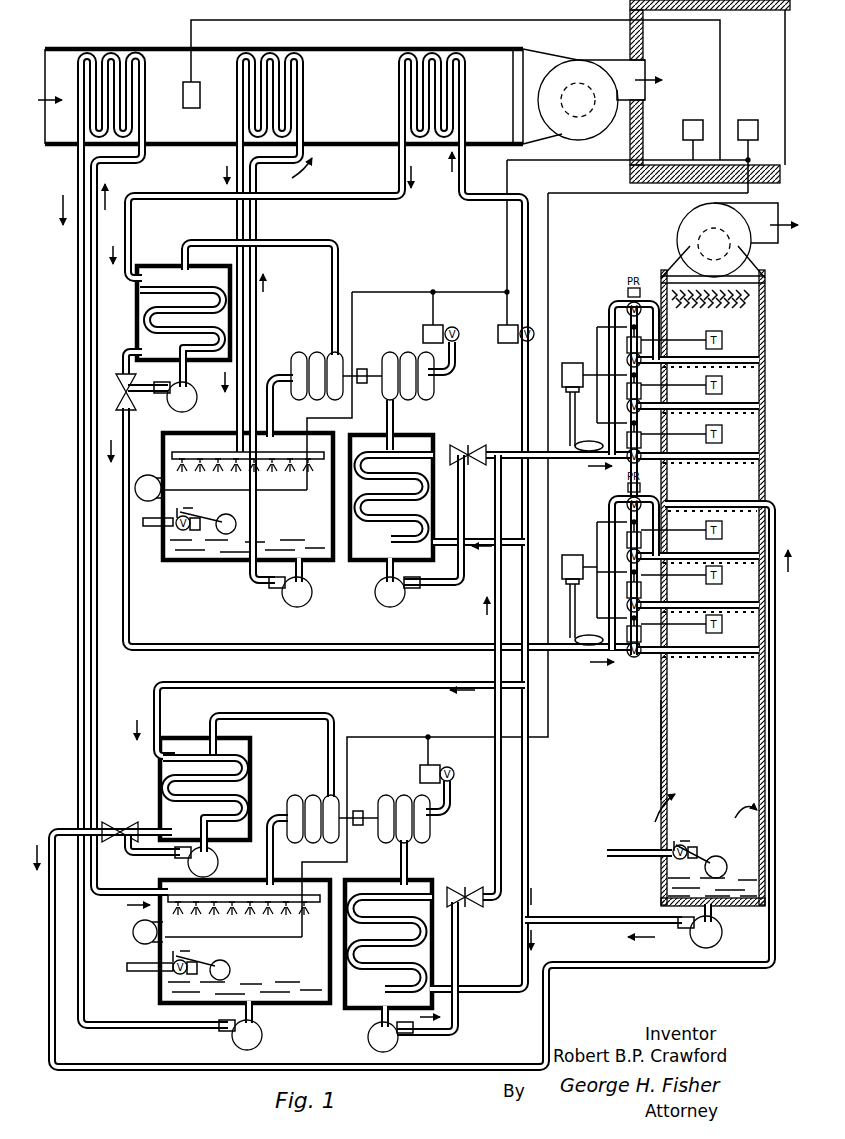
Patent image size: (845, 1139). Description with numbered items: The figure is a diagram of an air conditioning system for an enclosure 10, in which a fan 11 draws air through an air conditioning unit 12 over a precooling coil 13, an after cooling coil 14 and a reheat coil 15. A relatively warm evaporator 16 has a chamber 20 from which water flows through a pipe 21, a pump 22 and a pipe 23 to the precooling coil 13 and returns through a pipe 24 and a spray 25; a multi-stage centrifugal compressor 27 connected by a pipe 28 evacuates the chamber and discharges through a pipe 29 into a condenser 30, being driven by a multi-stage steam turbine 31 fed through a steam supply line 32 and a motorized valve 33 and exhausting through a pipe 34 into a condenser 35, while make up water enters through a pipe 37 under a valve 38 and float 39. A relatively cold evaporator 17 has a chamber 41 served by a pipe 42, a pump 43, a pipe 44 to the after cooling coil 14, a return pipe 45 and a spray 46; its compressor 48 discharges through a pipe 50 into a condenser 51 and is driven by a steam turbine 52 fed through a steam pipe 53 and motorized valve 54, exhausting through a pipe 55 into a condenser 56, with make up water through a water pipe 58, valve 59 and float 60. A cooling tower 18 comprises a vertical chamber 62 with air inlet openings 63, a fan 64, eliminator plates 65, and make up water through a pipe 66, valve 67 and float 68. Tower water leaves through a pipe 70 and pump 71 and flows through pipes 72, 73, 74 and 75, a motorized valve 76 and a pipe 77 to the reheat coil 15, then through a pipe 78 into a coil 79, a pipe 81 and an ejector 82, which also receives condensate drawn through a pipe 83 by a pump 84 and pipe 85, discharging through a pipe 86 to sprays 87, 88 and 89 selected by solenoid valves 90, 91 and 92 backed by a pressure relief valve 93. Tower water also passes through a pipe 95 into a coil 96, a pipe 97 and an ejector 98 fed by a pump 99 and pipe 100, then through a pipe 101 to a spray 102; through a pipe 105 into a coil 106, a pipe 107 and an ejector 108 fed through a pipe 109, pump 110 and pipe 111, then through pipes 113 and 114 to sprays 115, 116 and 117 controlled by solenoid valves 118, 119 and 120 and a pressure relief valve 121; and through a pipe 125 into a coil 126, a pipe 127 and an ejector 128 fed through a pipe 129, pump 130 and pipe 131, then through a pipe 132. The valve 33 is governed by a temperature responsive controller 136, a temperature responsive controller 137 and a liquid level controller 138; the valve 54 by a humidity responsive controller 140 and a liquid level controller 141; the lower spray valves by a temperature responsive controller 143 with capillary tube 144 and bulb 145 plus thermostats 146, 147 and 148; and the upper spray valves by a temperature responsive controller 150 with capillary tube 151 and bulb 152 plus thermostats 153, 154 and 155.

The enclosure 10 is at (753, 80).
The fan 11 is at (596, 130).
The air conditioning unit 12 is at (357, 153).
The precooling coil 13 is at (77, 66).
The after cooling coil 14 is at (236, 64).
The reheat coil 15 is at (396, 66).
The relatively warm evaporator 16 is at (145, 993).
The relatively cold evaporator 17 is at (190, 568).
The cooling tower 18 is at (652, 695).
The chamber 20 is at (298, 1006).
The pipe 21 is at (253, 1012).
The pump 22 is at (262, 1034).
The pipe 23 is at (143, 165).
The pipe 24 is at (75, 160).
The spray 25 is at (248, 890).
The multi-stage centrifugal compressor 27 is at (302, 790).
The pipe 28 is at (274, 848).
The pipe 29 is at (286, 714).
The condenser 30 is at (250, 750).
The multi-stage steam turbine 31 is at (422, 834).
The steam supply line 32 is at (448, 802).
The motorized valve 33 is at (418, 773).
The pipe 34 is at (408, 858).
The condenser 35 is at (432, 936).
The pipe 37 is at (142, 974).
The valve 38 is at (196, 957).
The float 39 is at (232, 968).
The chamber 41 is at (334, 562).
The pipe 42 is at (303, 570).
The pump 43 is at (308, 598).
The pipe 44 is at (258, 325).
The pipe 45 is at (236, 218).
The spray 46 is at (218, 452).
The multi-stage centrifugal compressor 48 is at (316, 350).
The pipe 50 is at (333, 275).
The condenser 51 is at (160, 266).
The multi-stage steam turbine 52 is at (400, 352).
The steam pipe 53 is at (452, 375).
The motorized valve 54 is at (422, 328).
The pipe 55 is at (392, 412).
The condenser 56 is at (420, 437).
The water pipe 58 is at (152, 528).
The valve 59 is at (196, 510).
The float 60 is at (229, 514).
The vertical chamber 62 is at (660, 748).
The air inlet openings 63 is at (660, 795).
The fan 64 is at (680, 224).
The eliminator plates 65 is at (732, 296).
The pipe 66 is at (616, 860).
The valve 67 is at (688, 845).
The float 68 is at (723, 858).
The pipe 70 is at (716, 910).
The pump 71 is at (722, 932).
The pipe 72 is at (564, 922).
The pipe 73 is at (533, 814).
The pipe 74 is at (530, 610).
The pipe 75 is at (524, 402).
The motorized valve 76 is at (508, 343).
The pipe 77 is at (530, 198).
The pipe 78 is at (382, 206).
The coil 79 is at (140, 301).
The pipe 81 is at (121, 362).
The ejector 82 is at (138, 404).
The pipe 83 is at (189, 374).
The pump 84 is at (197, 402).
The pipe 85 is at (146, 384).
The pipe 86 is at (126, 431).
The spray 87 is at (714, 664).
The spray 88 is at (732, 613).
The spray 89 is at (735, 564).
The solenoid valve 90 is at (628, 636).
The solenoid valve 91 is at (628, 591).
The solenoid valve 92 is at (596, 530).
The pressure relief valve 93 is at (626, 496).
The pipe 95 is at (442, 684).
The coil 96 is at (168, 775).
The pipe 97 is at (148, 824).
The ejector 98 is at (114, 822).
The pump 99 is at (218, 853).
The pipe 100 is at (138, 850).
The pipe 101 is at (48, 903).
The spray 102 is at (684, 506).
The pipe 105 is at (486, 996).
The coil 106 is at (424, 978).
The pipe 107 is at (452, 892).
The ejector 108 is at (475, 892).
The pipe 109 is at (382, 1020).
The pump 110 is at (368, 1037).
The pipe 111 is at (460, 1028).
The pipe 113 is at (494, 823).
The pipe 114 is at (566, 452).
The spray 115 is at (732, 460).
The spray 116 is at (732, 413).
The spray 117 is at (732, 368).
The solenoid valve 118 is at (632, 442).
The solenoid valve 119 is at (632, 393).
The solenoid valve 120 is at (596, 329).
The pressure relief valve 121 is at (626, 294).
The pipe 125 is at (470, 546).
The coil 126 is at (425, 517).
The pipe 127 is at (452, 450).
The ejector 128 is at (475, 450).
The pipe 129 is at (386, 572).
The pump 130 is at (375, 596).
The pipe 131 is at (436, 582).
The pipe 132 is at (492, 468).
The temperature responsive controller 136 is at (740, 118).
The temperature responsive controller 137 is at (193, 108).
The liquid level controller 138 is at (132, 932).
The humidity responsive controller 140 is at (682, 124).
The liquid level controller 141 is at (142, 480).
The temperature responsive controller 143 is at (574, 559).
The capillary tube 144 is at (569, 620).
The bulb 145 is at (602, 638).
The thermostat 146 is at (681, 624).
The thermostat 147 is at (681, 575).
The thermostat 148 is at (681, 530).
The temperature responsive controller 150 is at (574, 366).
The capillary tube 151 is at (569, 408).
The bulb 152 is at (602, 444).
The thermostat 153 is at (681, 434).
The thermostat 154 is at (681, 385).
The thermostat 155 is at (681, 340).